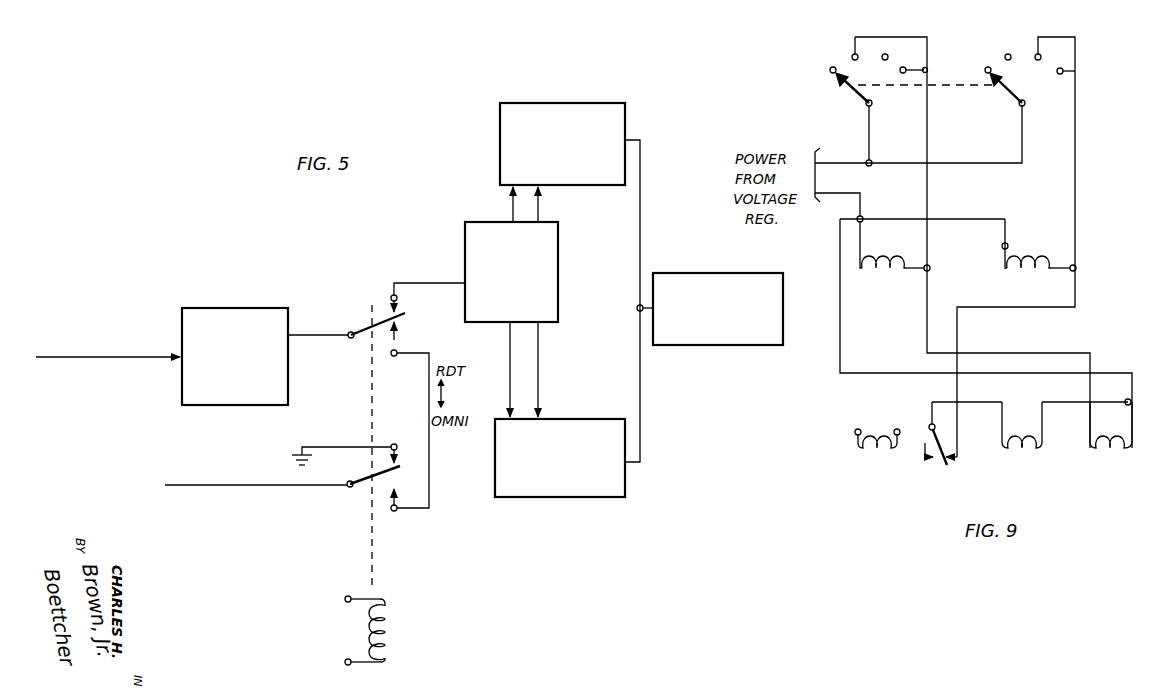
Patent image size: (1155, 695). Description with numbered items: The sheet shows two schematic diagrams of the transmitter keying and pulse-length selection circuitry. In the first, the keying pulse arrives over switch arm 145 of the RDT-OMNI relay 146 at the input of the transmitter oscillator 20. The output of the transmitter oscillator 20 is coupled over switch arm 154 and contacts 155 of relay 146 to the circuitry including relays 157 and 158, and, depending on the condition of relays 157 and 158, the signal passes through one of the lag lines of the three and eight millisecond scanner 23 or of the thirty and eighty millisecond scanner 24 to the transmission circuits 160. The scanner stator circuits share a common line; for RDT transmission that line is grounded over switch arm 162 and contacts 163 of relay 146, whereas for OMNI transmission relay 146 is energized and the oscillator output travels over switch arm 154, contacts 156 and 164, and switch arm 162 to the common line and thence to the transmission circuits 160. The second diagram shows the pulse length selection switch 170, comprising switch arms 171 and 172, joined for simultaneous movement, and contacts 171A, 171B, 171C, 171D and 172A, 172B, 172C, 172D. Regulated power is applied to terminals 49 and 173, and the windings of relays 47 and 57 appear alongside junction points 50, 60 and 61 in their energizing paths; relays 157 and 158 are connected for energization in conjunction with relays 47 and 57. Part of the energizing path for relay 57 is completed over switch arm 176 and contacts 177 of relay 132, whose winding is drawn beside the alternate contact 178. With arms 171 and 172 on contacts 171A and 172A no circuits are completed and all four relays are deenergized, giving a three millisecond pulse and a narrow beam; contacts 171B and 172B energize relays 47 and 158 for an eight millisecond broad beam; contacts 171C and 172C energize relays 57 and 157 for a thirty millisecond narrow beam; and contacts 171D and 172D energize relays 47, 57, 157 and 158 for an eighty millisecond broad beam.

In FIG. 5, the switch arm 145 is at (108, 357).
In FIG. 5, the transmitter oscillator 20 is at (235, 356).
In FIG. 5, the switch arm 154 is at (362, 330).
In FIG. 5, the contacts 155 is at (390, 305).
In FIG. 5, the contacts 156 is at (402, 325).
In FIG. 5, the relay 157 is at (511, 272).
In FIG. 9, the relay 157 is at (1021, 462).
In FIG. 5, the relay 158 is at (522, 287).
In FIG. 9, the relay 158 is at (1103, 462).
In FIG. 5, the 3 and 8 millisecond scanner 23 is at (562, 144).
In FIG. 5, the 30 and 80 millisecond scanner 24 is at (560, 458).
In FIG. 5, the transmission circuits 160 is at (718, 309).
In FIG. 5, the switch arm 162 is at (370, 482).
In FIG. 5, the contacts 163 is at (400, 462).
In FIG. 5, the contacts 164 is at (400, 478).
In FIG. 5, the RDT-OMNI relay 146 is at (368, 629).
In FIG. 9, the pulse length selection switch 170 is at (970, 131).
In FIG. 9, the switch arm 171 is at (850, 94).
In FIG. 9, the contact 171A is at (830, 70).
In FIG. 9, the contact 171B is at (853, 54).
In FIG. 9, the contact 171C is at (900, 30).
In FIG. 9, the contact 171D is at (905, 68).
In FIG. 9, the switch arm 172 is at (1018, 97).
In FIG. 9, the contact 172A is at (987, 67).
In FIG. 9, the contact 172B is at (1009, 54).
In FIG. 9, the contact 172C is at (1023, 235).
In FIG. 9, the contact 172D is at (1072, 69).
In FIG. 9, the terminal 173 is at (871, 161).
In FIG. 9, the terminal 49 is at (862, 217).
In FIG. 9, the relay 47 is at (886, 262).
In FIG. 9, the junction 50 is at (930, 268).
In FIG. 9, the junction 60 is at (1008, 244).
In FIG. 9, the pulse selection relay 57 is at (1026, 264).
In FIG. 9, the junction 61 is at (1076, 266).
In FIG. 9, the switch arm 176 is at (930, 428).
In FIG. 9, the contacts 177 is at (961, 469).
In FIG. 9, the switch contact 178 is at (928, 470).
In FIG. 9, the relay 132 is at (879, 456).